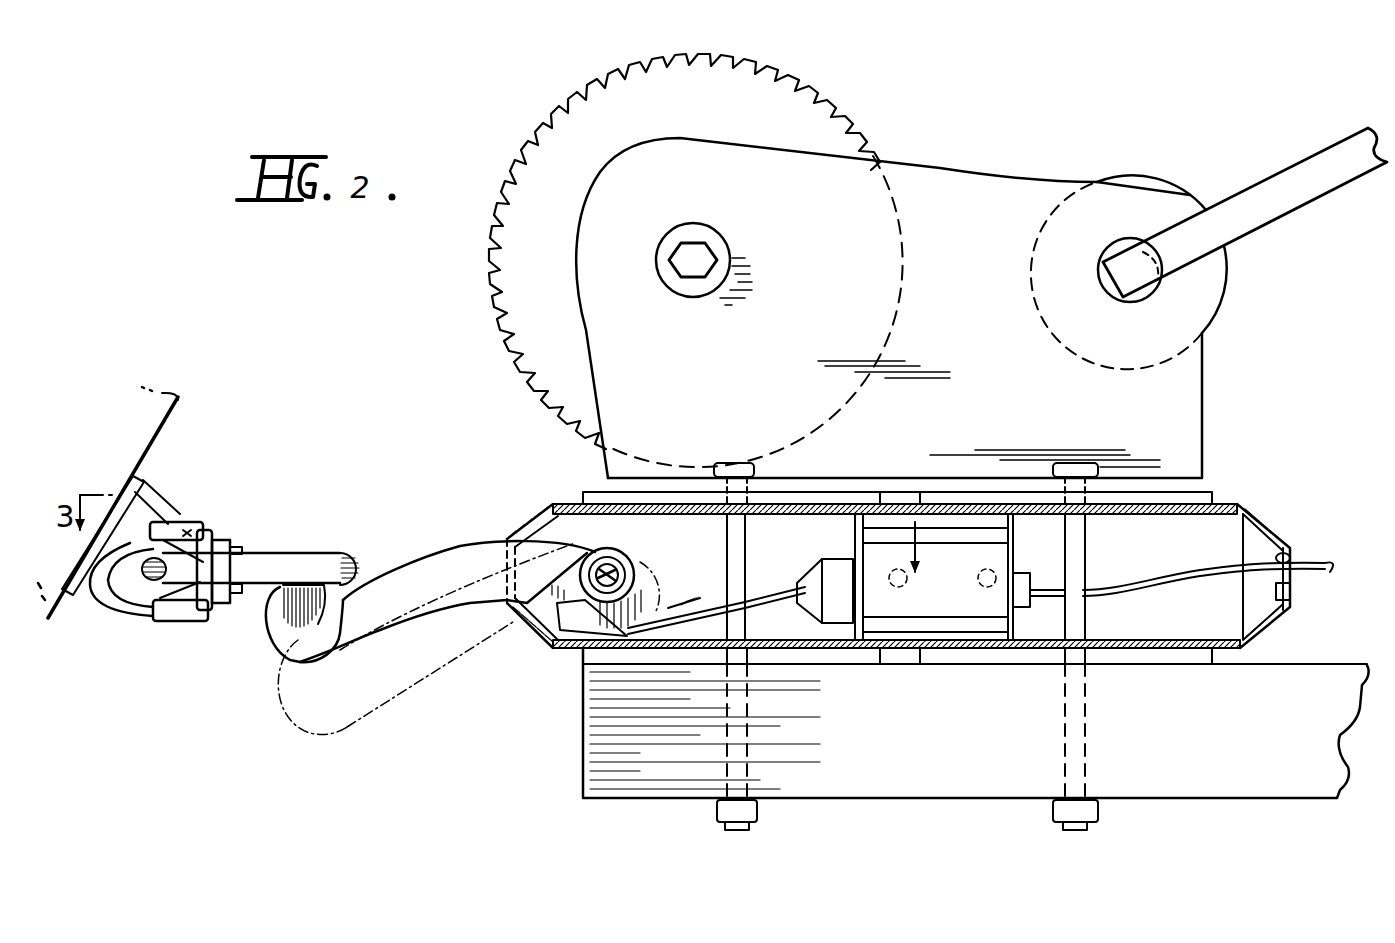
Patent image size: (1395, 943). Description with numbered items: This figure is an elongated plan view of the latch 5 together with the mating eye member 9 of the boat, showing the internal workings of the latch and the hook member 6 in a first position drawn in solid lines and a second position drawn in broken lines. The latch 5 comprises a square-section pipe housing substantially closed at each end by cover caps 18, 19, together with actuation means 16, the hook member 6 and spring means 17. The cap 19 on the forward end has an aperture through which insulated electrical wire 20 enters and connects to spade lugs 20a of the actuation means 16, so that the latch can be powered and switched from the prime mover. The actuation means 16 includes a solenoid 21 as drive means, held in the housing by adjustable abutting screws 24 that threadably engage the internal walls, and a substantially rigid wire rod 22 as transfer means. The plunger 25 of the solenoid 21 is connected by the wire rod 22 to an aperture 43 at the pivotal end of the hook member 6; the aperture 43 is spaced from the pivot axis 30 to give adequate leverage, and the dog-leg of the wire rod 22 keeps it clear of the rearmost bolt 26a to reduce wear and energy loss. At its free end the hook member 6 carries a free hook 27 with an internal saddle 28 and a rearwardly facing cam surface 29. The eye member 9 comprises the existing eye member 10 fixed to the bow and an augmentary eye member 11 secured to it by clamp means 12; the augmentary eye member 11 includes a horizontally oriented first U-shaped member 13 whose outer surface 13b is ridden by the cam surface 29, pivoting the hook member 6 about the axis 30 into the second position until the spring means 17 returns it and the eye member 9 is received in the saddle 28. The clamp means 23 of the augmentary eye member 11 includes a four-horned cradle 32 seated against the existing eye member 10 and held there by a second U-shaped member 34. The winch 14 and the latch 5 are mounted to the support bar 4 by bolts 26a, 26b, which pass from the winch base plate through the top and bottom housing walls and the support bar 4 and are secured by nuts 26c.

The support bar 4 is at (873, 745).
The latch 5 is at (503, 501).
The hook member 6 is at (333, 732).
The eye member 9 is at (168, 660).
The existing eye member 10 is at (111, 628).
The augmentary eye member 11 is at (258, 528).
The clamp means 12 is at (186, 516).
The first U-shaped member 13 is at (289, 572).
The outer surface 13b is at (328, 598).
The winch 14 is at (972, 258).
The actuation means 16 is at (927, 696).
The spring means 17 is at (567, 600).
The end cover cap 18 is at (550, 502).
The cap 19 is at (1258, 502).
The insulated electrical wire 20 is at (1312, 560).
The spade lugs 20a is at (1034, 600).
The solenoid 21 is at (950, 533).
The wire rod 22 is at (770, 583).
The clamp means 23 is at (187, 640).
The adjustable abutting screws 24 is at (992, 486).
The plunger 25 is at (838, 578).
The rearmost bolt 26a is at (745, 700).
The bolt 26b is at (1067, 707).
The nuts 26c is at (757, 808).
The free hook 27 is at (290, 640).
The saddle 28 is at (403, 612).
The cam surface 29 is at (262, 622).
The axis 30 is at (630, 565).
The four-horned cradle 32 is at (180, 537).
The second U-shaped member 34 is at (134, 564).
The aperture 43 is at (630, 642).